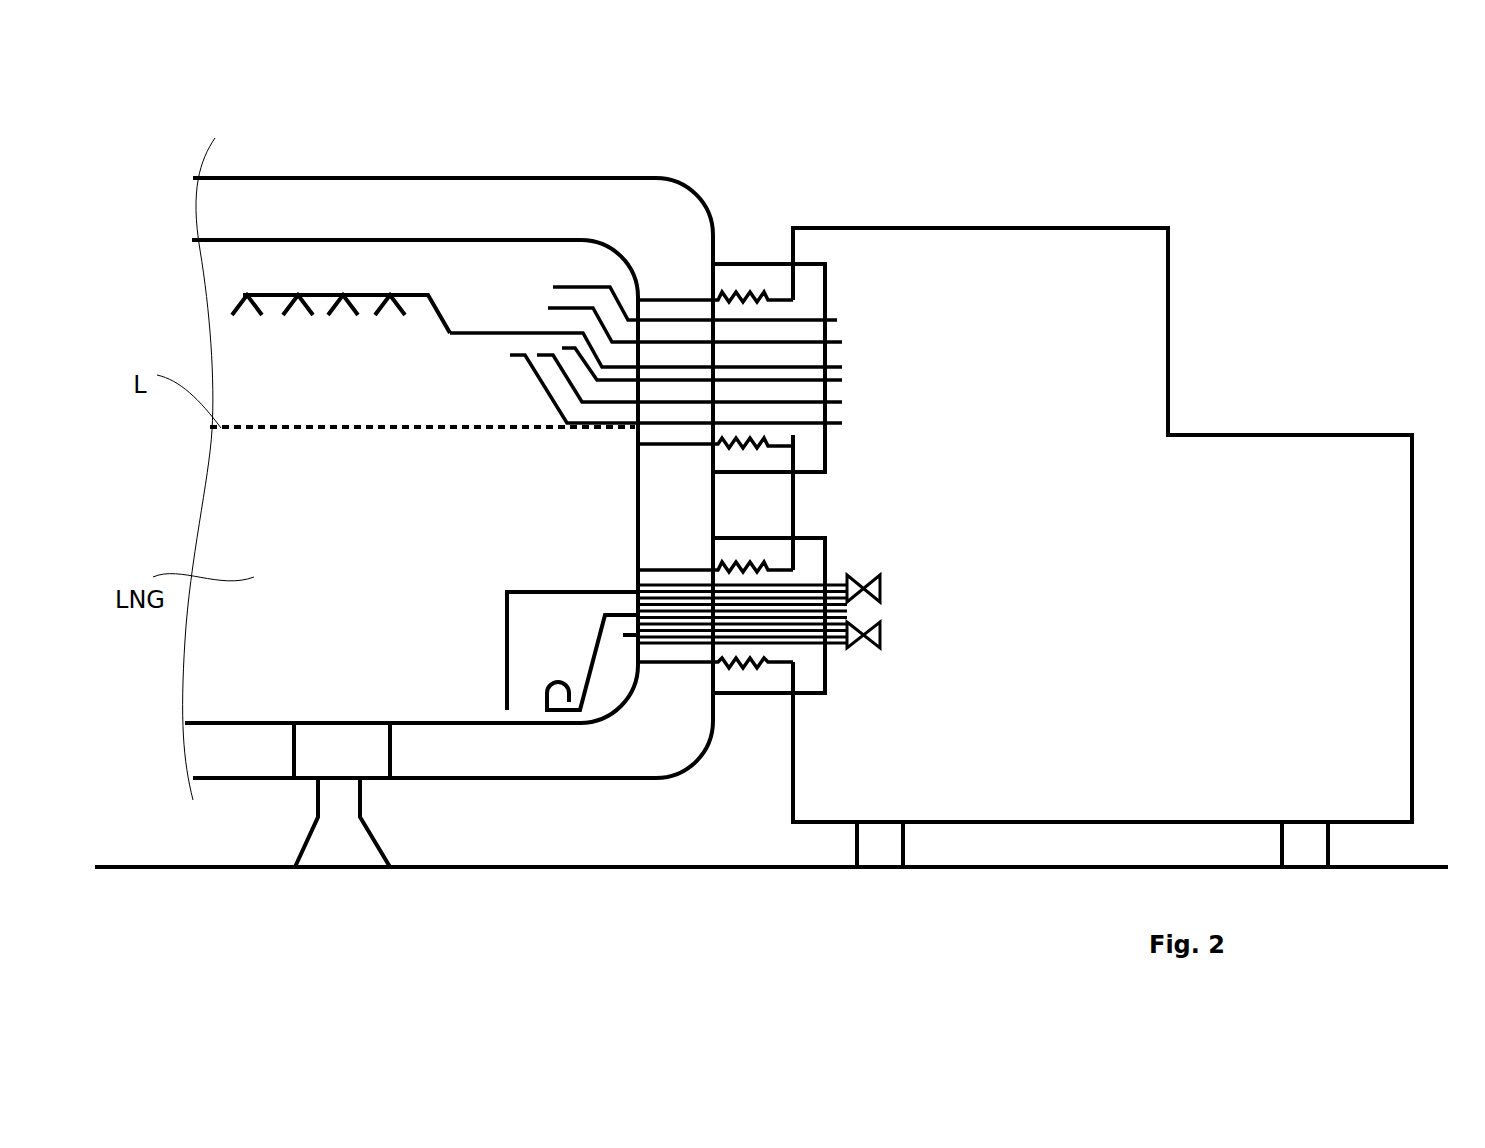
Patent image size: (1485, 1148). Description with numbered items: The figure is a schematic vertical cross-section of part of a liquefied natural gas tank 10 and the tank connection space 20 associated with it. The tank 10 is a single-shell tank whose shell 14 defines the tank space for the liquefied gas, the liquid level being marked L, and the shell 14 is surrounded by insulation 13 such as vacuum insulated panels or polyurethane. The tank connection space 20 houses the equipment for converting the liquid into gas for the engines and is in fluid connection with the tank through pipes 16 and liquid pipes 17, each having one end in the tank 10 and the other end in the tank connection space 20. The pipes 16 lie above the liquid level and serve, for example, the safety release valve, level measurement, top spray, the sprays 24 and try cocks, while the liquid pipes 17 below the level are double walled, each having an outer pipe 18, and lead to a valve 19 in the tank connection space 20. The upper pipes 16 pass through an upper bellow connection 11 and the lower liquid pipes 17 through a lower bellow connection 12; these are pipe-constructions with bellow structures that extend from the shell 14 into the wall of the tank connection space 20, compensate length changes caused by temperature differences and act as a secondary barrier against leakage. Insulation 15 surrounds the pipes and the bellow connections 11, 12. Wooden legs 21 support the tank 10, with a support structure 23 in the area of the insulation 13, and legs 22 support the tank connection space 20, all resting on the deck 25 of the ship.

The LNG tank 10 is at (647, 125).
The upper bellow connection 11 is at (728, 290).
The lower bellow connection 12 is at (737, 673).
The insulation 13 is at (366, 205).
The shell 14 is at (477, 238).
The insulation of bellow connection 15 is at (802, 282).
The pipes 16 is at (843, 320).
The LNG pipes 17 is at (527, 592).
The outer pipe 18 is at (845, 580).
The valve 19 is at (882, 585).
The tank connection space 20 is at (1178, 152).
The leg of LNG tank 21 is at (348, 835).
The leg of tank connection space 22 is at (873, 845).
The support structure 23 is at (308, 753).
The spray 24 is at (255, 320).
The deck 25 is at (1428, 865).